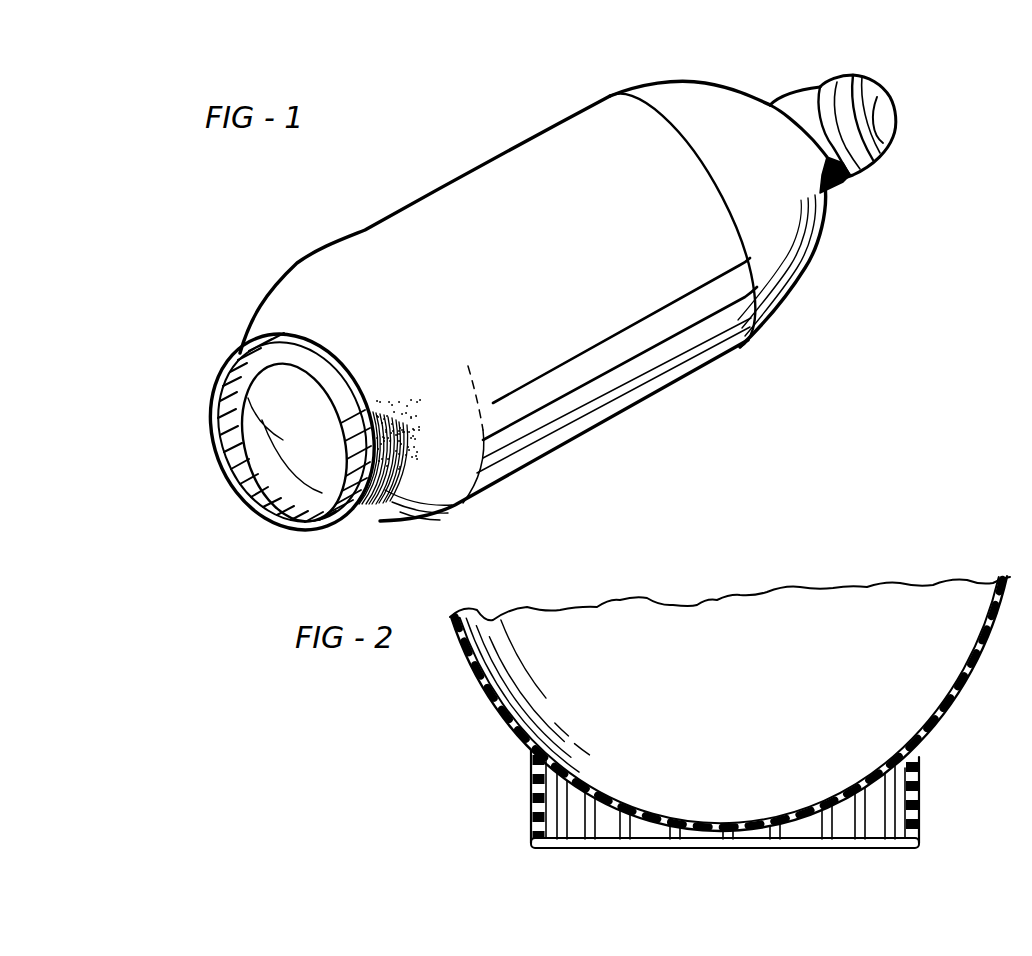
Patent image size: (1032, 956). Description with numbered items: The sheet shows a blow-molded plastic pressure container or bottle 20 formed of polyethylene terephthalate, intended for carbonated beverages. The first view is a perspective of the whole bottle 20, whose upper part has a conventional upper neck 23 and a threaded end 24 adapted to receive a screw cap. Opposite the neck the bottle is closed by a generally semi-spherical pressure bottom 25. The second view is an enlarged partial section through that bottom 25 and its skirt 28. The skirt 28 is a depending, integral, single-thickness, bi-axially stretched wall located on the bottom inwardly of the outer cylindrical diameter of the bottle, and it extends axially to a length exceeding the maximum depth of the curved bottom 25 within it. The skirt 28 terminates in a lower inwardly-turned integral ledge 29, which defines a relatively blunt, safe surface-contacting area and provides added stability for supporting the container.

In FIG. 1, the plastic pressure container or bottle 20 is at (449, 180).
In FIG. 1, the upper neck 23 is at (810, 266).
In FIG. 1, the threaded end 24 is at (870, 160).
In FIG. 1, the pressure bottom 25 is at (390, 516).
In FIG. 2, the pressure bottom 25 is at (523, 742).
In FIG. 1, the skirt 28 is at (246, 345).
In FIG. 2, the skirt 28 is at (920, 793).
In FIG. 1, the ledge 29 is at (250, 496).
In FIG. 2, the ledge 29 is at (900, 852).